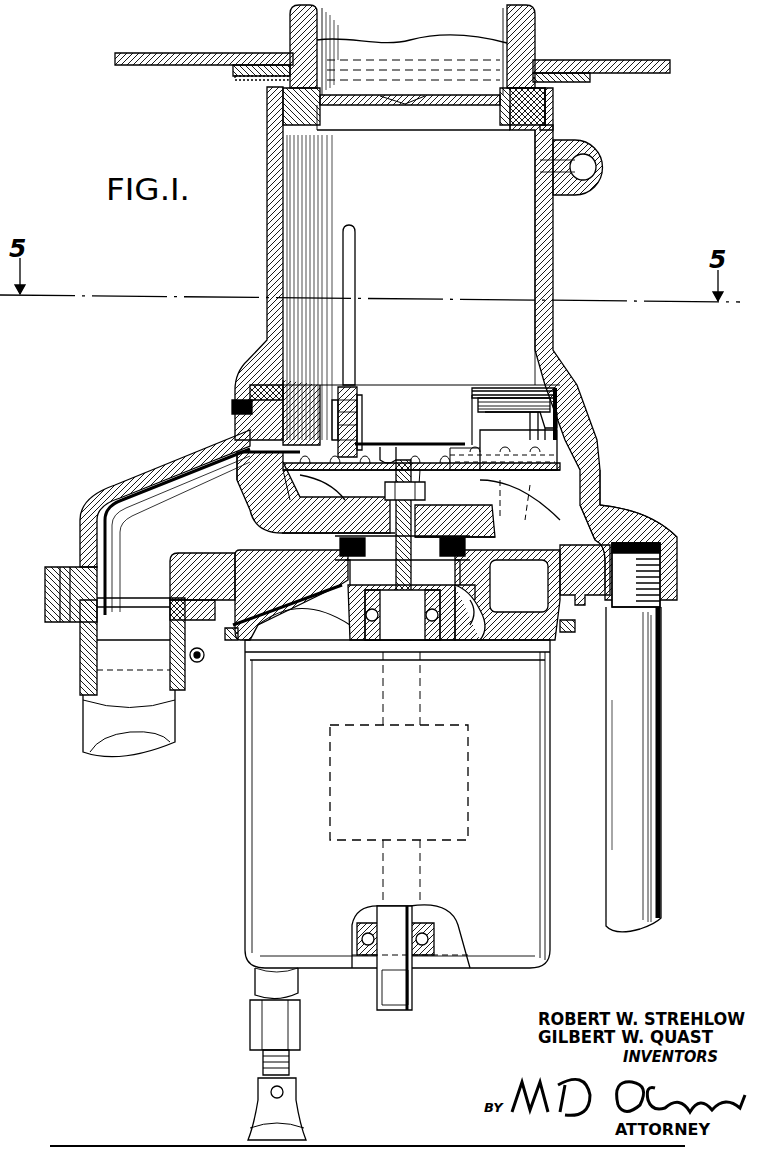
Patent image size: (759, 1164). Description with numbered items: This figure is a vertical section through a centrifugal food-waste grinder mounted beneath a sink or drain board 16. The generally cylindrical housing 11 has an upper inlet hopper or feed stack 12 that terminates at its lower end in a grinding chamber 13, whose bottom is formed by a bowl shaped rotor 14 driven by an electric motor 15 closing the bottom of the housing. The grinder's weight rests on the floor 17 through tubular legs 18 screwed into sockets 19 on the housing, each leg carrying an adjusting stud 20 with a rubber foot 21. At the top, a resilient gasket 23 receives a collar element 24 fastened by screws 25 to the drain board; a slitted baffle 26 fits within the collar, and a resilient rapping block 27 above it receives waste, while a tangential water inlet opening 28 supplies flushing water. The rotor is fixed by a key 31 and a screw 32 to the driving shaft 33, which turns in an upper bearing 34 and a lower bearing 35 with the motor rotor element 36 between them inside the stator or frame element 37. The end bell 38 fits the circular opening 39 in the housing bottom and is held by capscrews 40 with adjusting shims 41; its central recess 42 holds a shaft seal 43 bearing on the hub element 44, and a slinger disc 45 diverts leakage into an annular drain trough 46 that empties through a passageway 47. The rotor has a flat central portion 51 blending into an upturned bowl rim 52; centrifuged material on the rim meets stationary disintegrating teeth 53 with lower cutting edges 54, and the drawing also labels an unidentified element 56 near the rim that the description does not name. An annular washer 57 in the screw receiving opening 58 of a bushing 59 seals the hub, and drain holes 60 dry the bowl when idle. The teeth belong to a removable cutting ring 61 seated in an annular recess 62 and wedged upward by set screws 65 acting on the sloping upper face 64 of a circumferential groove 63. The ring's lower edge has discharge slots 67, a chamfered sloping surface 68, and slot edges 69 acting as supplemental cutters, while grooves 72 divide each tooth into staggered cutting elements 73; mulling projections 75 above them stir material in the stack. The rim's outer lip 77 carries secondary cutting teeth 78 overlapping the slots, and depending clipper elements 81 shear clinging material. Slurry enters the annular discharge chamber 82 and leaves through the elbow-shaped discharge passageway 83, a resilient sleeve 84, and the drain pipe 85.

The housing 11 is at (266, 244).
The feed stack 12 is at (511, 272).
The grinding chamber 13 is at (460, 406).
The bowl shaped rotor 14 is at (560, 515).
The electric motor 15 is at (552, 838).
The sink or drain board 16 is at (202, 54).
The floor 17 is at (158, 1145).
The legs 18 is at (664, 675).
The sockets 19 is at (664, 598).
The adjusting stud 20 is at (300, 1058).
The rubber foot 21 is at (304, 1130).
The resilient gasket 23 is at (556, 100).
The collar element 24 is at (270, 80).
The screws 25 is at (270, 62).
The baffle 26 is at (478, 106).
The rapping block 27 is at (538, 28).
The water inlet opening 28 is at (585, 185).
The key 31 is at (393, 494).
The screw 32 is at (401, 682).
The driving shaft 33 is at (402, 615).
The bearing 34 is at (507, 596).
The bearing 35 is at (440, 940).
The rotor element 36 is at (328, 802).
The stator or frame element 37 is at (244, 806).
The end bell or flange plate 38 is at (560, 590).
The circular opening 39 is at (590, 606).
The capscrews 40 is at (230, 640).
The adjusting shims 41 is at (212, 620).
The central recess 42 is at (470, 595).
The shaft seal 43 is at (478, 548).
The hub element 44 is at (470, 580).
The slinger disc 45 is at (480, 610).
The annular drain trough 46 is at (345, 595).
The passageway 47 is at (290, 632).
The central portion 51 is at (278, 533).
The bowl rim 52 is at (252, 505).
The disintegrating teeth 53 is at (368, 430).
The cutting edges 54 is at (421, 472).
The rim 56 is at (303, 479).
The annular washer 57 is at (422, 530).
The screw receiving opening 58 is at (419, 482).
The bushing 59 is at (460, 535).
The drain holes 60 is at (312, 492).
The cutting ring 61 is at (248, 394).
The annular recess 62 is at (560, 388).
The circumferential groove 63 is at (565, 428).
The sloping upper face 64 is at (560, 407).
The set screws 65 is at (232, 417).
The discharge slots 67 is at (398, 452).
The sloping surface 68 is at (460, 445).
The edges 69 is at (250, 482).
The circumferential grooves 72 is at (336, 440).
The cutting elements 73 is at (355, 395).
The mulling projections 75 is at (357, 338).
The outer lip 77 is at (455, 448).
The secondary cutting teeth 78 is at (478, 462).
The clipper elements 81 is at (594, 486).
The annular discharge chamber 82 is at (584, 547).
The discharge passageway 83 is at (165, 522).
The resilient sleeve 84 is at (77, 638).
The drain pipe 85 is at (88, 712).